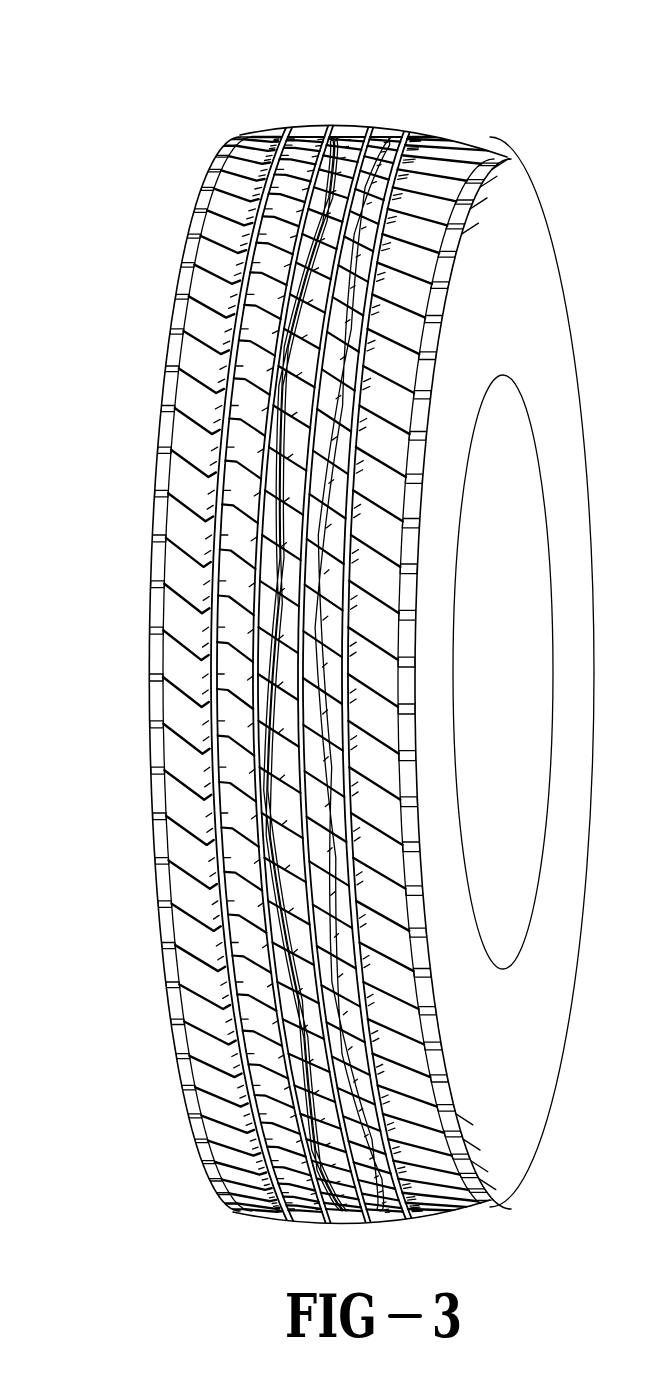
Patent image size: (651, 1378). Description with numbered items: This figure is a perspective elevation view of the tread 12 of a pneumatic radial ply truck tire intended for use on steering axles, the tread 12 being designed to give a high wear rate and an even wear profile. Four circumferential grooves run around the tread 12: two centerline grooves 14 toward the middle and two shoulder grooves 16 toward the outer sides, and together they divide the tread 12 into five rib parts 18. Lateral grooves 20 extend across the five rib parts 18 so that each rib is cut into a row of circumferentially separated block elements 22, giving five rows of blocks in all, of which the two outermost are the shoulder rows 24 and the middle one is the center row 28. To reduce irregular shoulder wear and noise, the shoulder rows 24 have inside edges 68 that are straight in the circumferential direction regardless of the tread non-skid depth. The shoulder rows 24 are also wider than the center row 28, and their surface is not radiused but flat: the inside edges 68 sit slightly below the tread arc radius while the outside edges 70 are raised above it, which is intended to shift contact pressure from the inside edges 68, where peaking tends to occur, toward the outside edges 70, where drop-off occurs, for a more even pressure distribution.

The tread 12 is at (97, 118).
The centerline grooves 14 is at (300, 839).
The shoulder grooves 16 is at (228, 982).
The rib parts 18 is at (283, 380).
The lateral grooves 20 is at (295, 515).
The block elements 22 is at (273, 230).
The shoulder rows 24 is at (247, 134).
The center row 28 is at (365, 125).
The inside edges 68 is at (205, 735).
The outside edges 70 is at (165, 790).